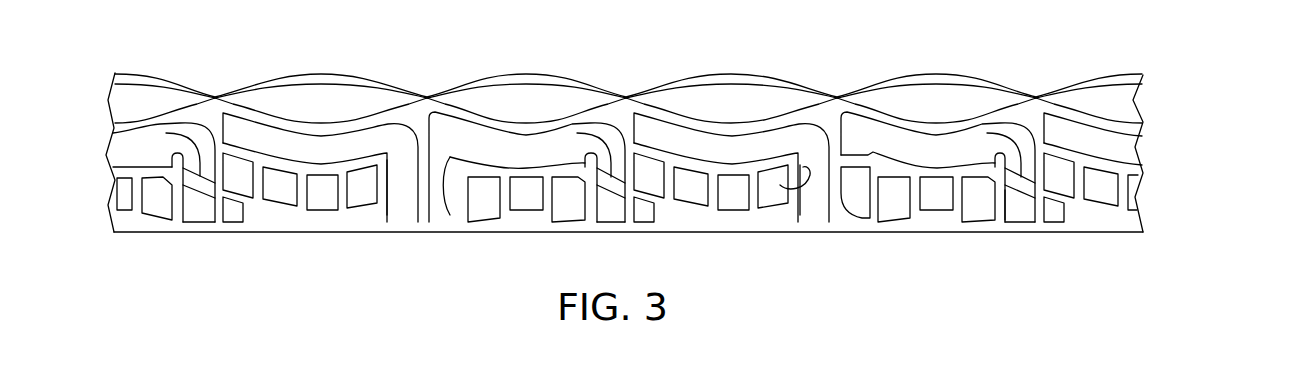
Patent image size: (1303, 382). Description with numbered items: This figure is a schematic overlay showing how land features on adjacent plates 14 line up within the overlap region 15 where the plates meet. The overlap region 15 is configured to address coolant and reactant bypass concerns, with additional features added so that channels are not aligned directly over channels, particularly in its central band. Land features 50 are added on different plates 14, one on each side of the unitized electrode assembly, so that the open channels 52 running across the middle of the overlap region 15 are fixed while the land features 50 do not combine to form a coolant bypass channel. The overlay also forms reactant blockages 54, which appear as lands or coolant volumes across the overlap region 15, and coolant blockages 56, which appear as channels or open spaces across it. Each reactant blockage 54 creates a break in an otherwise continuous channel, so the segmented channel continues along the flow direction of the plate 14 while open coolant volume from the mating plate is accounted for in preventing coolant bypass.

The plate 14 is at (1138, 77).
The overlap region 15 is at (1185, 220).
The land feature 50 is at (780, 185).
The open channel 52 is at (403, 195).
The reactant blockage 54 is at (387, 157).
The coolant blockage 56 is at (815, 207).